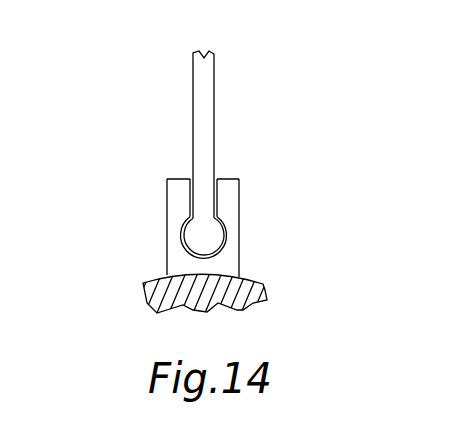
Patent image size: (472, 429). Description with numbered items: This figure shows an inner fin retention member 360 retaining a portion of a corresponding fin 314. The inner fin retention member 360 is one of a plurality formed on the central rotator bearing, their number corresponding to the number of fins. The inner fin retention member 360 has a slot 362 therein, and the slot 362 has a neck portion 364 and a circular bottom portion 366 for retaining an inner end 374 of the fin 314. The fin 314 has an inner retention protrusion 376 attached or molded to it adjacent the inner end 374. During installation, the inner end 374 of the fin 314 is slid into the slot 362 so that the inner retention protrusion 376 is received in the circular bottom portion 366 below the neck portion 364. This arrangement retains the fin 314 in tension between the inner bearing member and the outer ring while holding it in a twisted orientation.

The fin 314 is at (253, 303).
The inner fin retention member 360 is at (276, 220).
The slot 362 is at (227, 158).
The neck portion 364 is at (193, 189).
The circular bottom portion 366 is at (197, 243).
The inner end 374 is at (207, 207).
The inner retention protrusion 376 is at (210, 237).